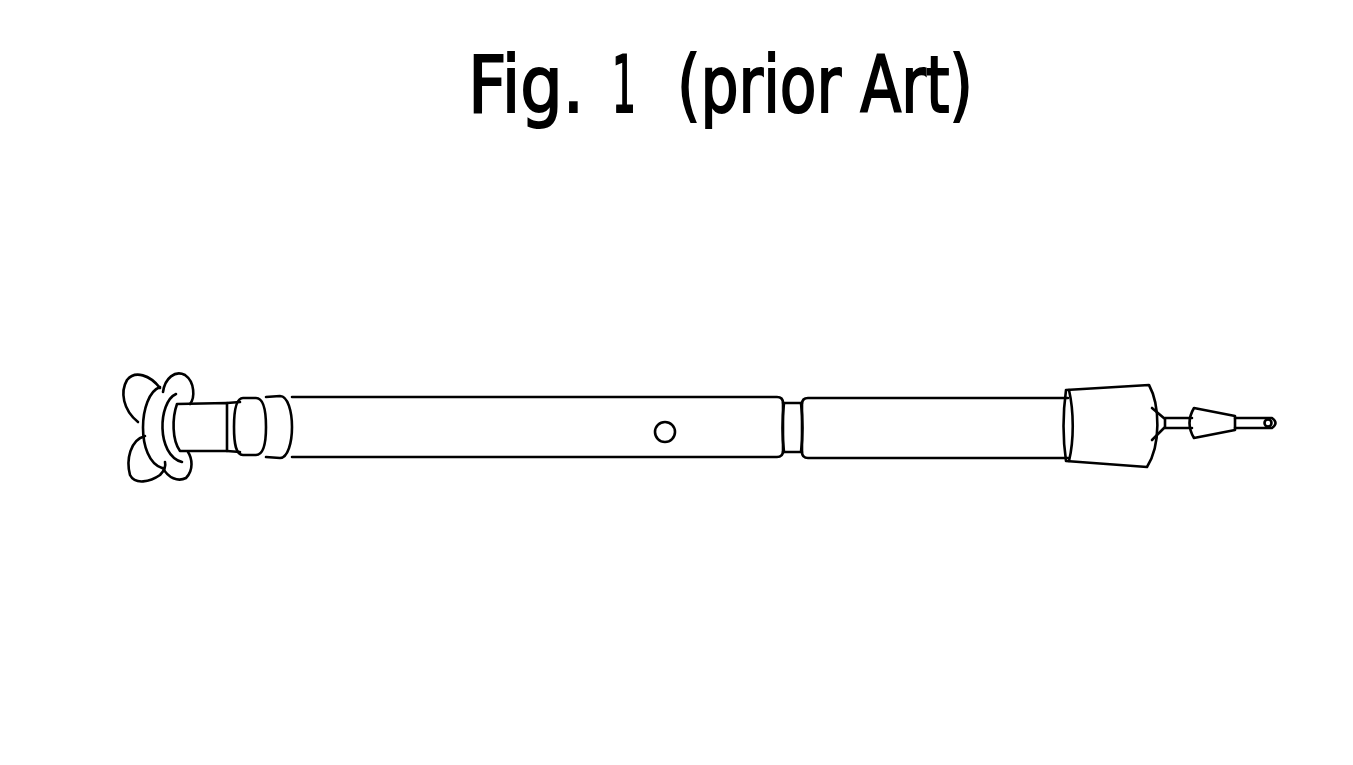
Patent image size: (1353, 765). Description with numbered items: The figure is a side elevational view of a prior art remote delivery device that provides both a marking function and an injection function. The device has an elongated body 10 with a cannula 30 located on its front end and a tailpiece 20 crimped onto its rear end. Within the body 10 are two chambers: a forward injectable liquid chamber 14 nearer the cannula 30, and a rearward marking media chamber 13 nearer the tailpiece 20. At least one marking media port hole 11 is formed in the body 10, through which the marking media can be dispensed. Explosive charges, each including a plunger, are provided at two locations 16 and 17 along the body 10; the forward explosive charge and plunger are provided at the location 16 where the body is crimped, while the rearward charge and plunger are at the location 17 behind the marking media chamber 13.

The body 10 is at (680, 412).
The marking media port hole 11 is at (665, 432).
The rearward marking media chamber 13 is at (440, 424).
The forward injectable liquid chamber 14 is at (962, 428).
The location of forward explosive charge and plunger 16 is at (792, 457).
The location of rearward explosive charge and plunger 17 is at (295, 440).
The tailpiece 20 is at (205, 415).
The cannula 30 is at (1237, 415).